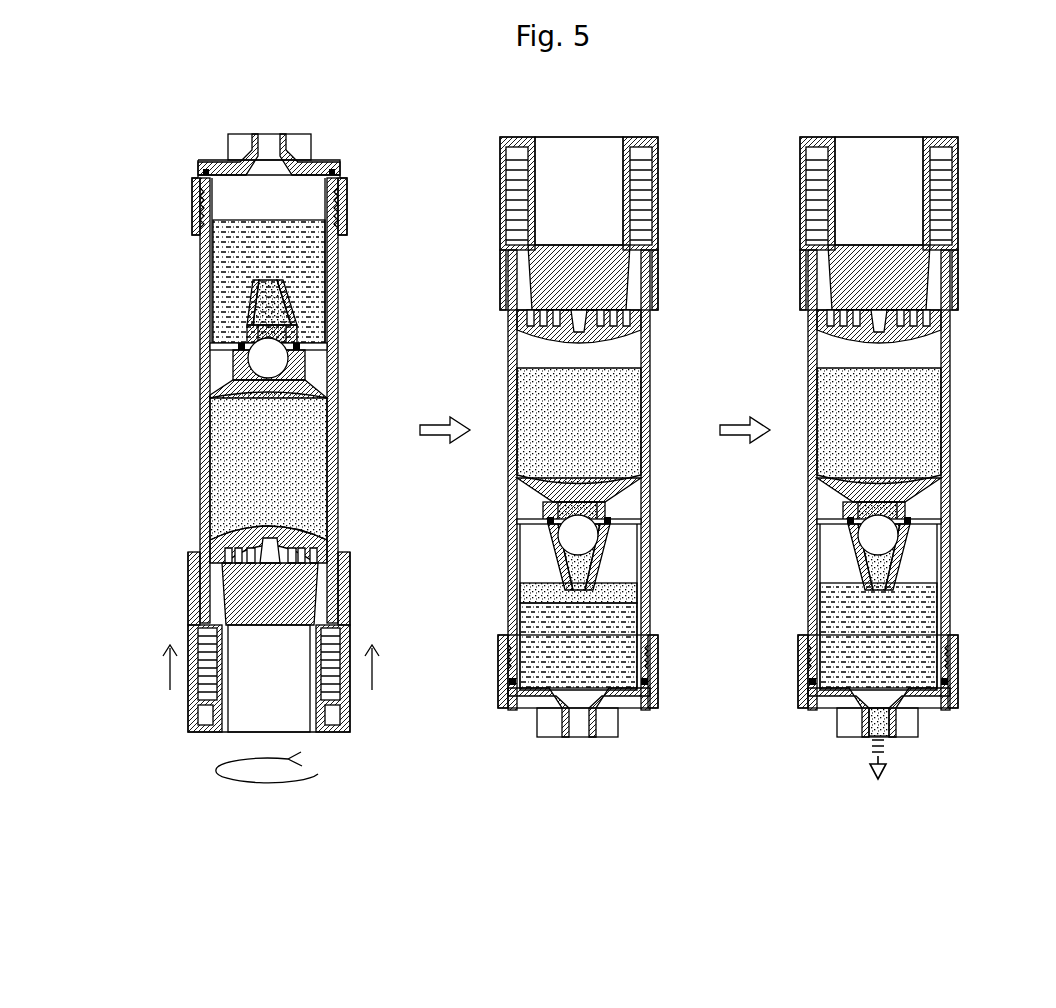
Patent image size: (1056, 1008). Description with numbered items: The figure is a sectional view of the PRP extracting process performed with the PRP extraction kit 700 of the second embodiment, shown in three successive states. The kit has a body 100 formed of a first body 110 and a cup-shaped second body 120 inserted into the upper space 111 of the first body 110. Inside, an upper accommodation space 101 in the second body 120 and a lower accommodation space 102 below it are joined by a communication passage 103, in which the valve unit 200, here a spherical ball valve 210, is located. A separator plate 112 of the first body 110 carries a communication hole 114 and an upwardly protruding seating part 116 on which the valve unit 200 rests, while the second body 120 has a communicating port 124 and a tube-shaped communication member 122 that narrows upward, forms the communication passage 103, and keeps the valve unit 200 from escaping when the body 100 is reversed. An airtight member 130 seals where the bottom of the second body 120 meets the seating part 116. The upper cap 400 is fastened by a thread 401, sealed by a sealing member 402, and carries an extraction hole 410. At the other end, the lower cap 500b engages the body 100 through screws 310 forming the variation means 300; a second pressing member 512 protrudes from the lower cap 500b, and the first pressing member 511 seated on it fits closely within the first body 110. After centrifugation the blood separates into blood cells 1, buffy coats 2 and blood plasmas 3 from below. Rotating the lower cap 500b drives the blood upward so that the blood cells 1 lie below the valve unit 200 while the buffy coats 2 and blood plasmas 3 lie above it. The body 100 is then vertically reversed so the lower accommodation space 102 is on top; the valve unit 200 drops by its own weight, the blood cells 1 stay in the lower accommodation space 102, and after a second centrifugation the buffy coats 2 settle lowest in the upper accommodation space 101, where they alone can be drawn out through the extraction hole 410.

The PRP extraction kit 700 is at (282, 430).
The extraction hole 410 is at (269, 146).
The sealing member 402 is at (345, 171).
The upper cap 400 is at (365, 196).
The thread 401 is at (346, 221).
The blood plasmas 3 is at (232, 241).
The buffy coats 2 is at (245, 283).
The ball valve 210 is at (242, 316).
The airtight member 130 is at (238, 345).
The valve unit 200 is at (281, 322).
The body 100 is at (275, 400).
The blood cells 1 is at (210, 471).
The first pressing member 511 is at (225, 537).
The second pressing member 512 is at (238, 598).
The upper accommodation space 101 is at (300, 250).
The second body 120 is at (285, 282).
The communication member 122 is at (283, 299).
The communication passage 103 is at (300, 319).
The communicating port 124 is at (300, 333).
The upper space 111 is at (290, 358).
The separator plate 112 is at (308, 369).
The seating part 116 is at (312, 389).
The communication hole 114 is at (322, 398).
The lower accommodation space 102 is at (330, 437).
The first body 110 is at (338, 468).
The screws 310 is at (348, 589).
The variation means 300 is at (282, 630).
The lower cap 500b is at (363, 734).